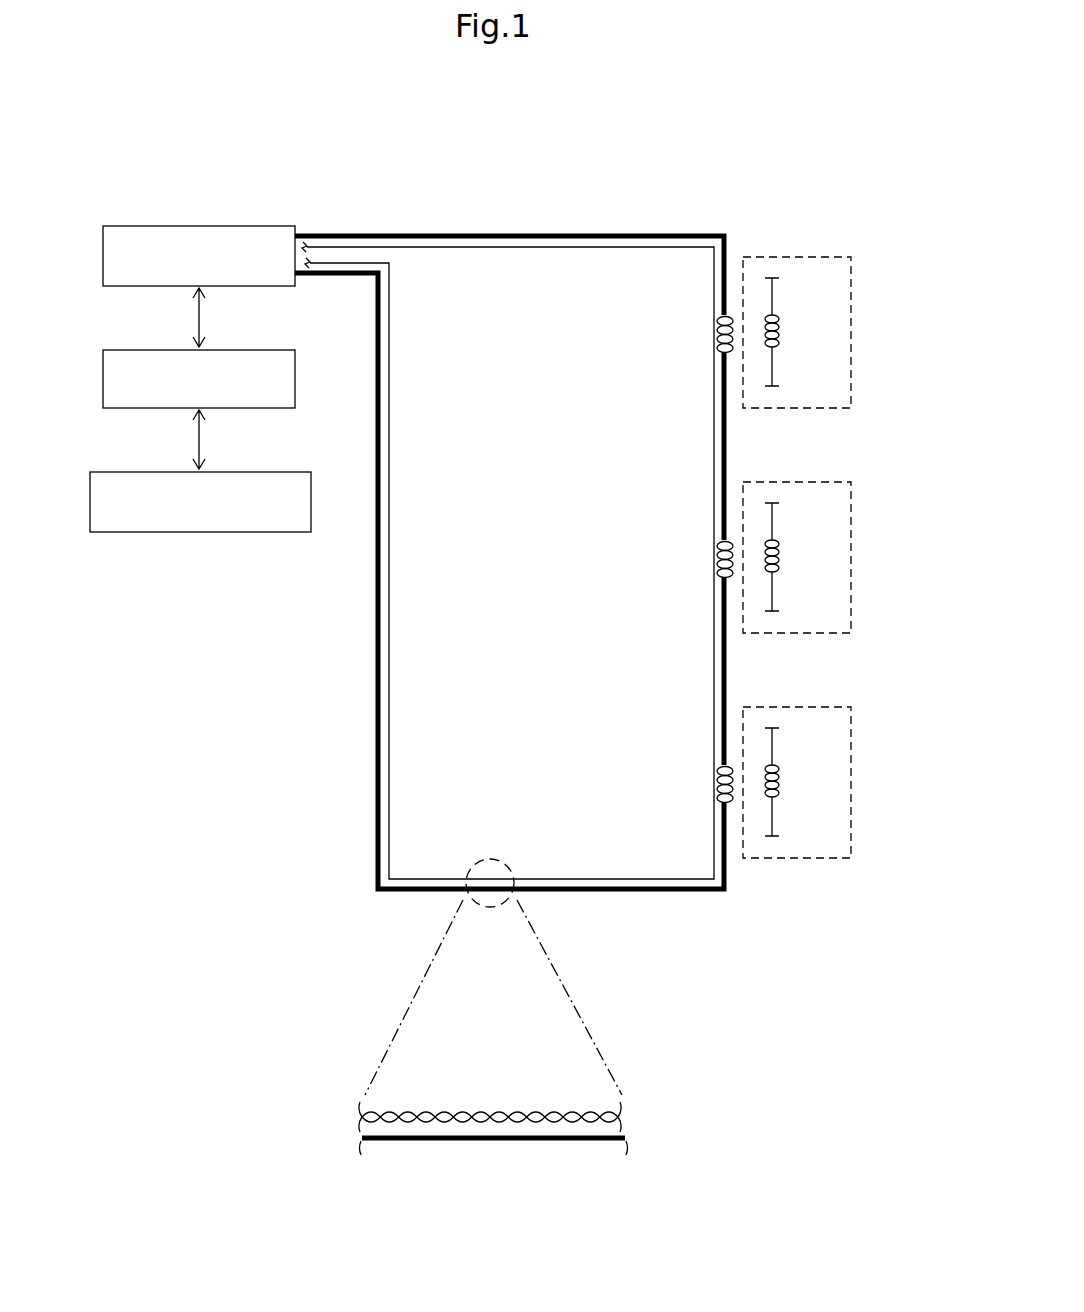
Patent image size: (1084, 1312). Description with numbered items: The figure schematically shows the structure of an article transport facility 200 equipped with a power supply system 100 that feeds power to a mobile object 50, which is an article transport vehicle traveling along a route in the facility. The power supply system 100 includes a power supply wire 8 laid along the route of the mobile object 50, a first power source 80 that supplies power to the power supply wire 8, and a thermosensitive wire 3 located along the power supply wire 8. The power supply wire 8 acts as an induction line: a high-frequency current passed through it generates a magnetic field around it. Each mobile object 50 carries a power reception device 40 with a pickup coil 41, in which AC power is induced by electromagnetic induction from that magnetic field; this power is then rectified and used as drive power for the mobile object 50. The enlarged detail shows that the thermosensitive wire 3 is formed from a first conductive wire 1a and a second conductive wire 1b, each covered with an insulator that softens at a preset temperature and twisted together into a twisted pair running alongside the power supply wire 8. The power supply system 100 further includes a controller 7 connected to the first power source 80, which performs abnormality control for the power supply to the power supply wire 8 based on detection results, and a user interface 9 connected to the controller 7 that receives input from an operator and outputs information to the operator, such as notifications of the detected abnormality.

The article transport facility 200 is at (859, 109).
The power supply system 100 is at (691, 190).
The power supply wire 8 is at (542, 233).
The thermosensitive wire 3 is at (490, 247).
The first conductive wire 1a is at (511, 1116).
The second conductive wire 1b is at (512, 1141).
The first power source 80 is at (200, 226).
The controller 7 is at (102, 380).
The user interface 9 is at (90, 502).
The power reception device 40 is at (800, 272).
The pickup coil 41 is at (779, 333).
The mobile object 50 is at (852, 320).